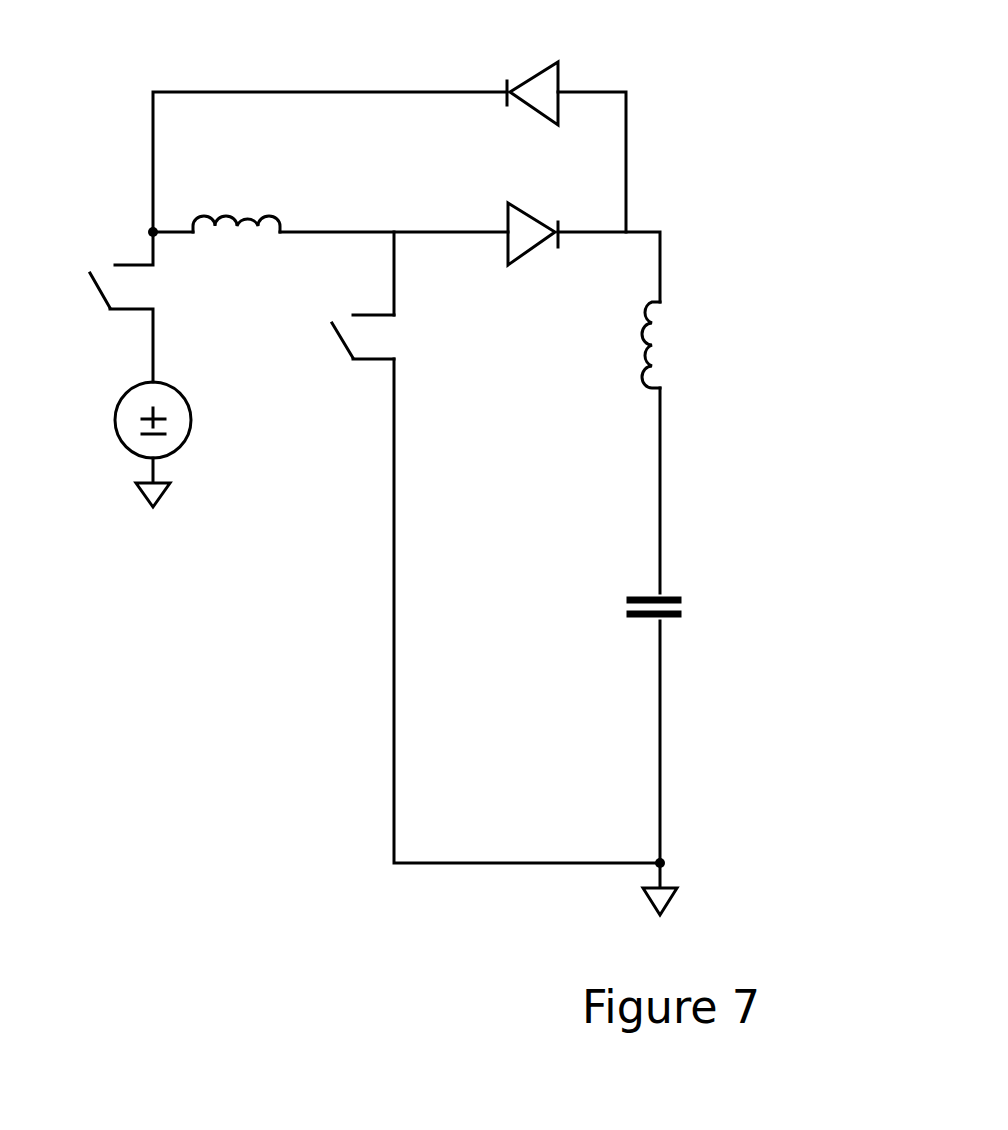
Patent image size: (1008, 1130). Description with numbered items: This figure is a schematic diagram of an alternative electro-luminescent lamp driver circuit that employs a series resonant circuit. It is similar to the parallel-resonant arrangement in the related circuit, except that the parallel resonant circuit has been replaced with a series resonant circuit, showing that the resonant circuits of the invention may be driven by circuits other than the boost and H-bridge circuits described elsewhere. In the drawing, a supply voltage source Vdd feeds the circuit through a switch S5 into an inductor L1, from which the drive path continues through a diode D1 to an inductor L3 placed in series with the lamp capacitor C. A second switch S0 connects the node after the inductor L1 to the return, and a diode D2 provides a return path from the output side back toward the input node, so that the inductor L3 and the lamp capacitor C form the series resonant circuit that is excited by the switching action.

The switch S5 is at (102, 298).
The inductor L1 is at (236, 190).
The diode D2 is at (532, 66).
The diode D1 is at (531, 203).
The switch S0 is at (358, 304).
The inductor L3 is at (614, 345).
The supply voltage source Vdd is at (199, 444).
The capacitor C lamp C is at (746, 606).